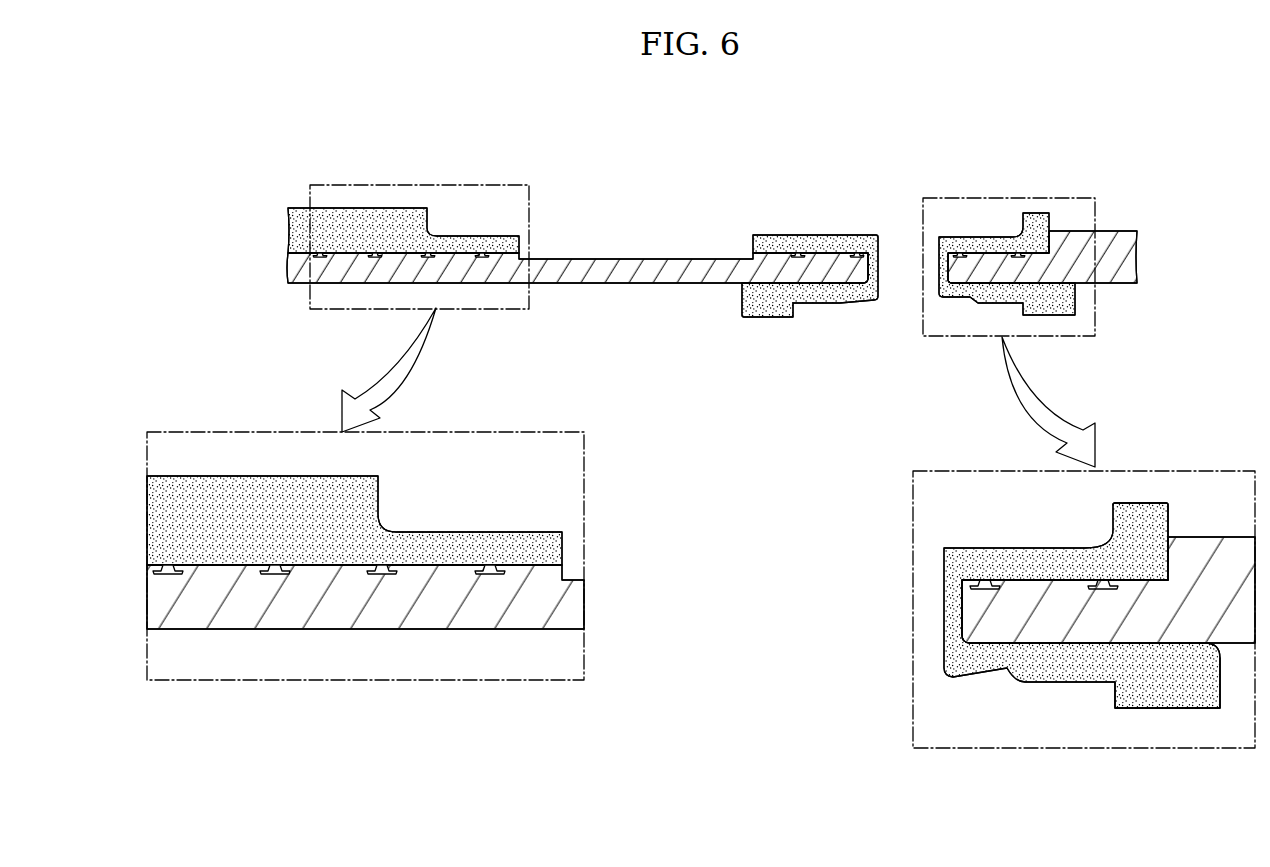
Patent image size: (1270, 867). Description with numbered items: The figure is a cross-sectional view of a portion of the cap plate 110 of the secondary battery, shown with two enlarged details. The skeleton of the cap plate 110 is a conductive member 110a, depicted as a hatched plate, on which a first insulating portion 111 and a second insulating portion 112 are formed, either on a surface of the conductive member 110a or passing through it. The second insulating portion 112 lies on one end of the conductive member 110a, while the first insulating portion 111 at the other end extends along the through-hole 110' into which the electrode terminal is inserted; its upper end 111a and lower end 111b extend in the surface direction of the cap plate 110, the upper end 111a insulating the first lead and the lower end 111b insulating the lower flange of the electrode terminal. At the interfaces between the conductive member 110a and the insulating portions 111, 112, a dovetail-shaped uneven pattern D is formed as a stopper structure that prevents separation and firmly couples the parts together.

The cap plate 110 is at (1089, 472).
The through-hole 110' is at (527, 351).
The conductive member 110a is at (1117, 272).
The first insulating portion 111 is at (1071, 469).
The upper end of the first insulating portion 111a is at (1148, 512).
The lower end of the first insulating portion 111b is at (1148, 685).
The second insulating portion 112 is at (407, 220).
The dovetail-shaped uneven pattern D is at (412, 566).